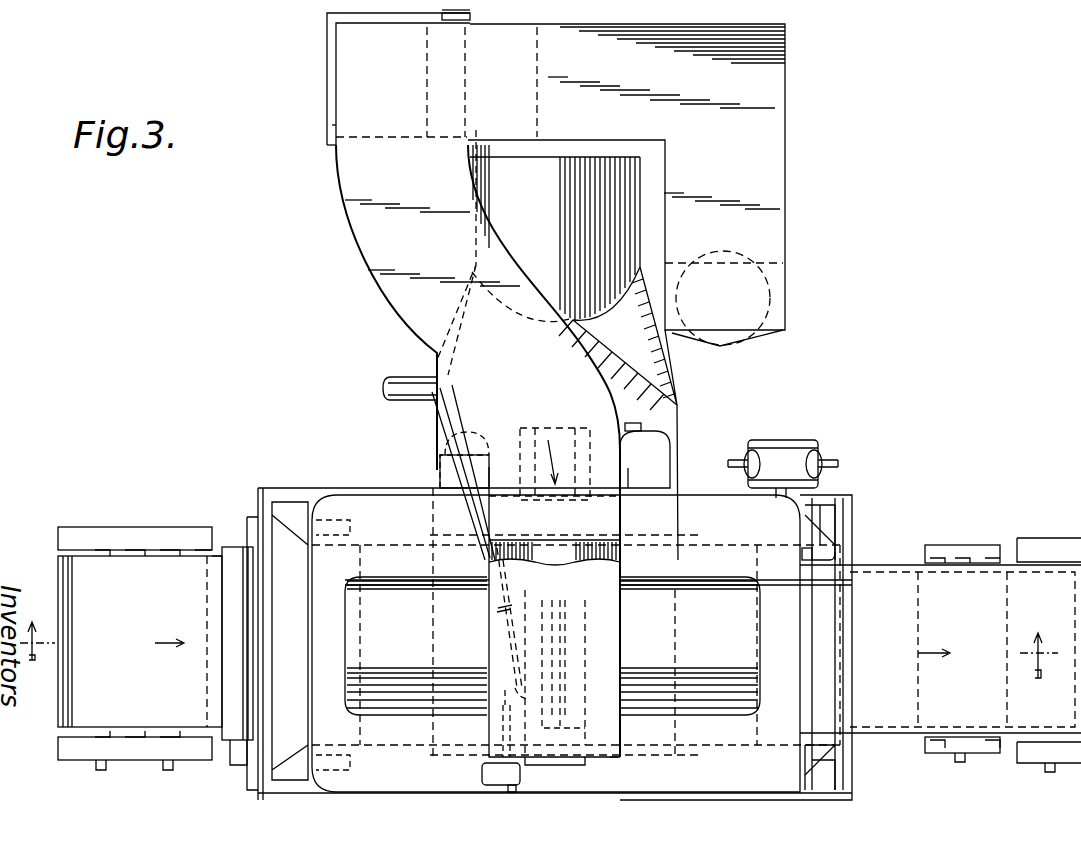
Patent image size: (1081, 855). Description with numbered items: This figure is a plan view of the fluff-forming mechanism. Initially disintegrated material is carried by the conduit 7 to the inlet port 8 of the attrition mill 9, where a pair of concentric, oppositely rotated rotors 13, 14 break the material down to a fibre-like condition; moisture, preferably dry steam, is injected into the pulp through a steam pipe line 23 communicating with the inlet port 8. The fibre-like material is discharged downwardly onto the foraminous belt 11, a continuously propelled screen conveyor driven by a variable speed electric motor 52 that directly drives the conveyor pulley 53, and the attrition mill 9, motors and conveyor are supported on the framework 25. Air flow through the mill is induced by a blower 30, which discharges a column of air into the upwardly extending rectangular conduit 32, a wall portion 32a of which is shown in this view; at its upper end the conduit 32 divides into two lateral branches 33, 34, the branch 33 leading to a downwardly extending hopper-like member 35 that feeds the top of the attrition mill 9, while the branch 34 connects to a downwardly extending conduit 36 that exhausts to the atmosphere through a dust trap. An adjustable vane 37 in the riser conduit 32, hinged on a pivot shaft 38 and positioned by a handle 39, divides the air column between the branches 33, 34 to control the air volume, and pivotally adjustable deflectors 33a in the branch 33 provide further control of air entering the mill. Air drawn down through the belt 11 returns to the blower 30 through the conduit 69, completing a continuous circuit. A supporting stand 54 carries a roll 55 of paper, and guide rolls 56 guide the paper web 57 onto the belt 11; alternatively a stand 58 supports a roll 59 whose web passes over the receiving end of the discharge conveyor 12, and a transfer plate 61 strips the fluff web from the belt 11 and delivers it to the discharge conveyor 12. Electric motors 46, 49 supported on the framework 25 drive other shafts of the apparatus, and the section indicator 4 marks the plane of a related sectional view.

The section line 4- 4 is at (539, 633).
The conduit 7 is at (397, 401).
The inlet port 8 is at (520, 615).
The attrition mill 9 is at (612, 760).
The foraminous belt 11 is at (410, 545).
The discharge conveyor 12 is at (950, 755).
The rotor 13 is at (585, 740).
The rotor 14 is at (585, 724).
The steam pipe line 23 is at (505, 788).
The framework 25 is at (845, 530).
The blower 30 is at (329, 74).
The conduit 32 is at (402, 143).
The partition wall extension 32a is at (336, 125).
The branch 33 is at (383, 290).
The pivotally adjustable deflectors 33a is at (603, 514).
The branch 34 is at (785, 97).
The hopper-like member 35 is at (605, 555).
The downwardly extending conduit 36 is at (770, 300).
The adjustable vane 37 is at (427, 85).
The pivot shaft 38 is at (465, 47).
The handle 39 is at (455, 18).
The motor 46 is at (445, 470).
The electric motor 49 is at (670, 468).
The electric motor 52 is at (790, 446).
The conveyor pulley 53 is at (818, 760).
The supporting stand 54 is at (135, 527).
The roll 55 is at (58, 556).
The guide rolls 56 is at (232, 547).
The paper web 57 is at (193, 572).
The stand 58 is at (958, 545).
The roll 59 is at (1012, 562).
The transfer plate 61 is at (836, 556).
The conduit 69 is at (678, 422).